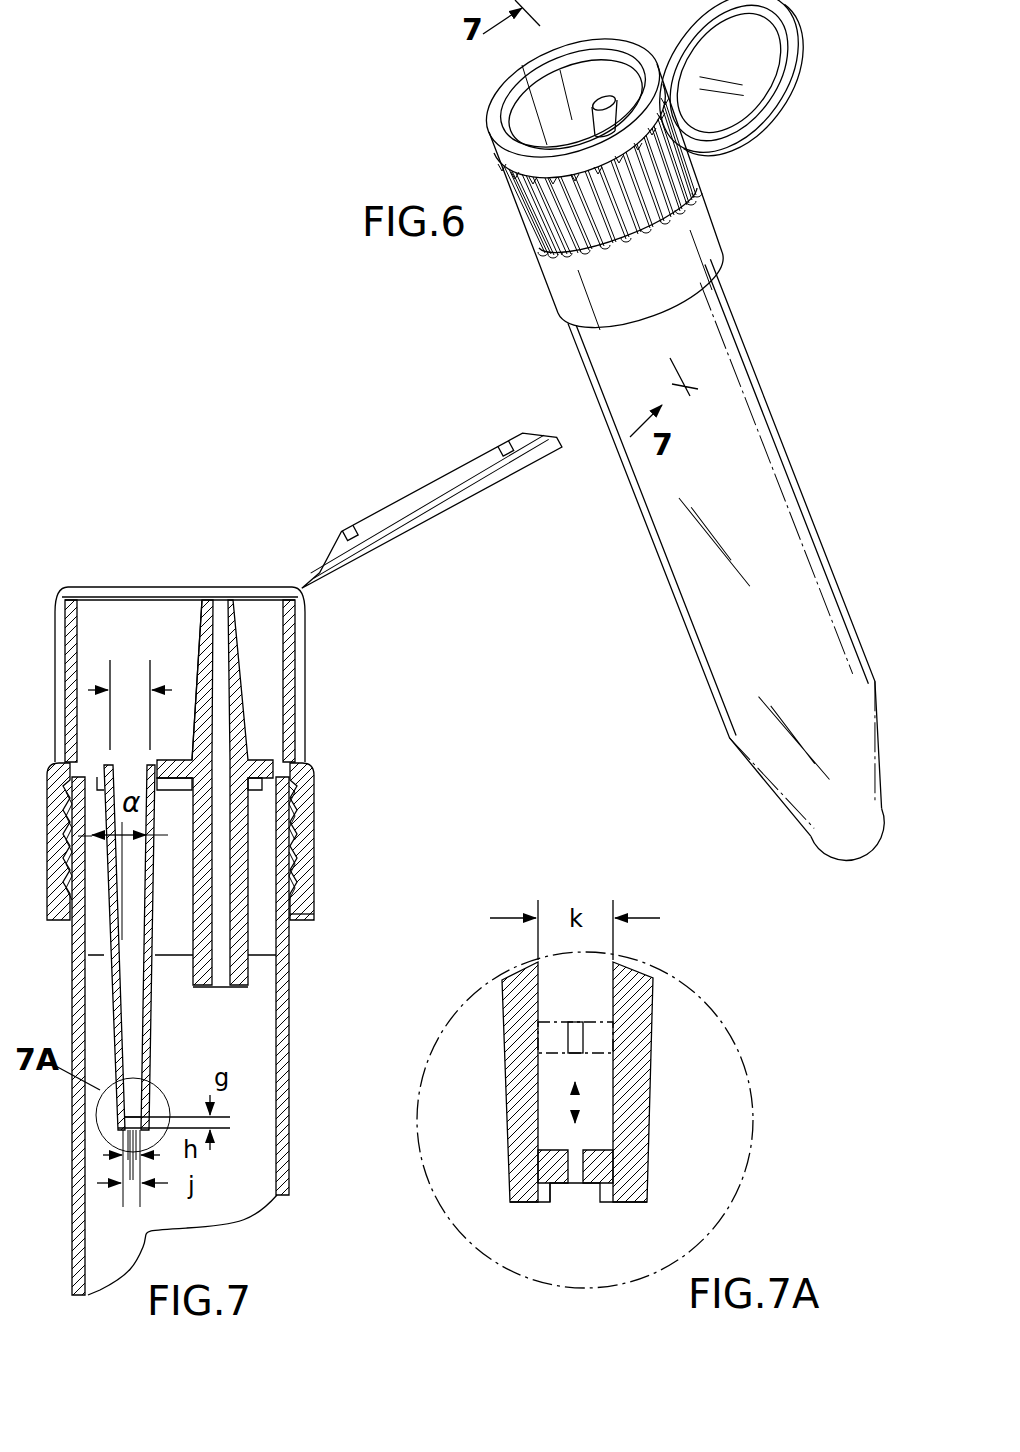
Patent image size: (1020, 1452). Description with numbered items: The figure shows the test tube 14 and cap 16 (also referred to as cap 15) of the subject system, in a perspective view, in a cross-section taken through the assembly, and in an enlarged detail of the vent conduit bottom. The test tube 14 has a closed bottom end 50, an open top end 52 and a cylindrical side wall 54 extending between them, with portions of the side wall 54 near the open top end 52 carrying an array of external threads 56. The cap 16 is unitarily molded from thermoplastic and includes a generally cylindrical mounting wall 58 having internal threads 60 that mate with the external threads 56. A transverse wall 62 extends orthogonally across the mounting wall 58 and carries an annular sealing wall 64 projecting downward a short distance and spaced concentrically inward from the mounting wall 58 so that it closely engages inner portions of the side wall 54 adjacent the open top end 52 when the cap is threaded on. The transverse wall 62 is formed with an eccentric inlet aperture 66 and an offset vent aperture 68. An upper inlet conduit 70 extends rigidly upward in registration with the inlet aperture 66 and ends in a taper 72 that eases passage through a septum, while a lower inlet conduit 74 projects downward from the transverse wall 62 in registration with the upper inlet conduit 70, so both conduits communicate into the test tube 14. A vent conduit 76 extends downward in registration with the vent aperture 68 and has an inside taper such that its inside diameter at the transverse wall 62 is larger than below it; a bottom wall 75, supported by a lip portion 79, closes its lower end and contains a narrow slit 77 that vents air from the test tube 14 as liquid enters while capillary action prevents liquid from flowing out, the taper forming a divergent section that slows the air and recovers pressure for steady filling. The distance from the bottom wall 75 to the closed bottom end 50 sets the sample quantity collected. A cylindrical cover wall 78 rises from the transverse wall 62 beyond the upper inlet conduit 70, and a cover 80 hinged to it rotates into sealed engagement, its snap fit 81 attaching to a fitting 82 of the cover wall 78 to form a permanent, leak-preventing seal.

In FIG. 6, the test tube 14 is at (749, 591).
In FIG. 7, the test tube 14 is at (234, 1036).
In FIG. 7, the cap 15 is at (348, 786).
In FIG. 6, the cap 16 is at (790, 101).
In FIG. 7, the cap 16 is at (425, 471).
In FIG. 6, the closed bottom end 50 is at (853, 840).
In FIG. 7, the open top end 52 is at (292, 766).
In FIG. 6, the cylindrical side wall 54 is at (721, 500).
In FIG. 7, the cylindrical side wall 54 is at (291, 1086).
In FIG. 7, the external threads 56 is at (312, 878).
In FIG. 7, the cylindrical mounting wall 58 is at (313, 918).
In FIG. 7, the internal threads 60 is at (312, 842).
In FIG. 7, the transverse wall 62 is at (264, 774).
In FIG. 7, the annular sealing wall 64 is at (64, 832).
In FIG. 7, the inlet aperture 66 is at (215, 773).
In FIG. 7, the vent aperture 68 is at (103, 786).
In FIG. 7, the upper inlet conduit 70 is at (200, 645).
In FIG. 7, the taper 72 is at (210, 787).
In FIG. 7, the lower inlet conduit 74 is at (257, 972).
In FIG. 7, the bottom wall 75 is at (108, 1146).
In FIG. 7A, the bottom wall 75 is at (585, 1187).
In FIG. 7, the vent conduit 76 is at (150, 1025).
In FIG. 7A, the vent conduit 76 is at (652, 1046).
In FIG. 7, the narrow slit 77 is at (140, 1110).
In FIG. 7A, the narrow slit 77 is at (580, 1048).
In FIG. 7, the cylindrical cover wall 78 is at (64, 590).
In FIG. 7A, the lip portion 79 is at (552, 1208).
In FIG. 7, the cover 80 is at (424, 504).
In FIG. 7, the snap fit 81 is at (427, 491).
In FIG. 7, the fitting 82 is at (95, 596).